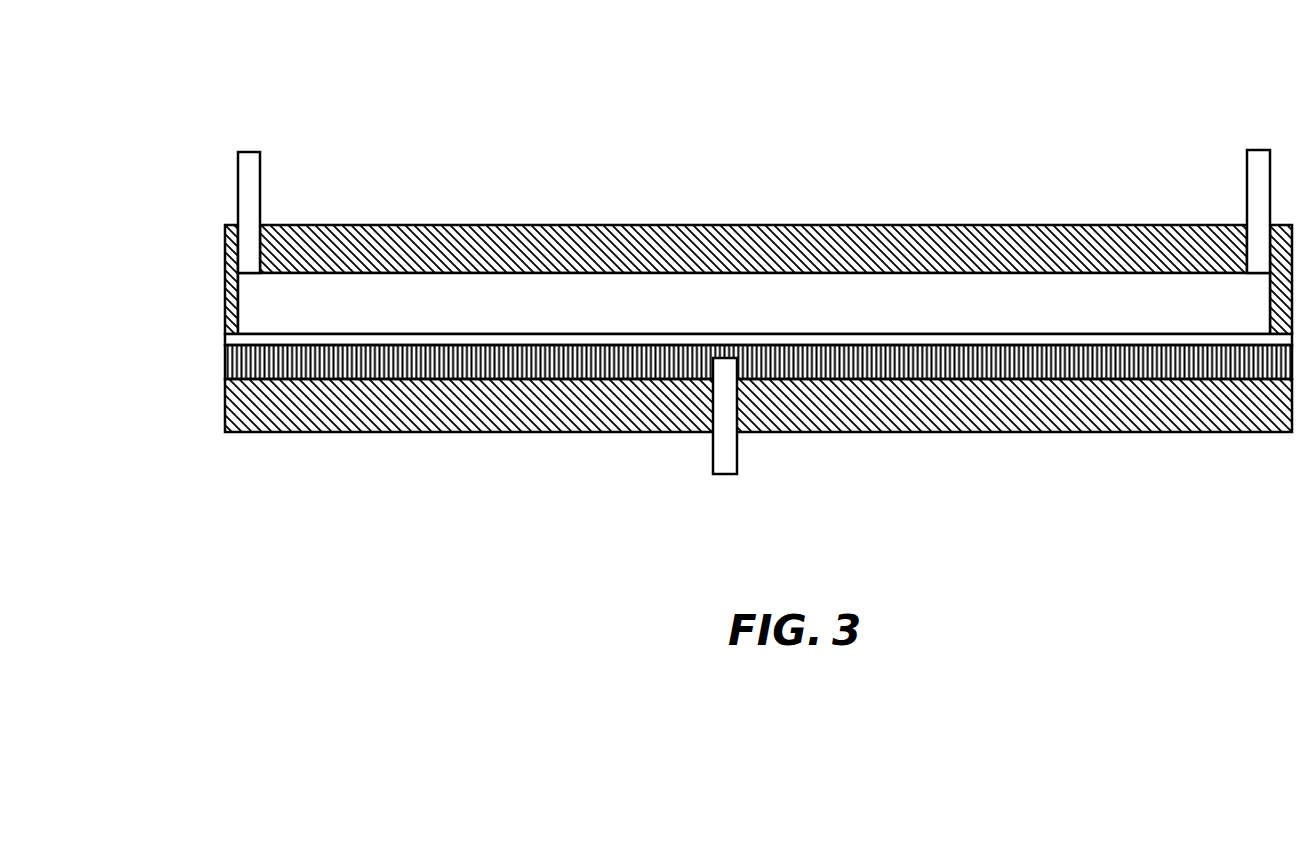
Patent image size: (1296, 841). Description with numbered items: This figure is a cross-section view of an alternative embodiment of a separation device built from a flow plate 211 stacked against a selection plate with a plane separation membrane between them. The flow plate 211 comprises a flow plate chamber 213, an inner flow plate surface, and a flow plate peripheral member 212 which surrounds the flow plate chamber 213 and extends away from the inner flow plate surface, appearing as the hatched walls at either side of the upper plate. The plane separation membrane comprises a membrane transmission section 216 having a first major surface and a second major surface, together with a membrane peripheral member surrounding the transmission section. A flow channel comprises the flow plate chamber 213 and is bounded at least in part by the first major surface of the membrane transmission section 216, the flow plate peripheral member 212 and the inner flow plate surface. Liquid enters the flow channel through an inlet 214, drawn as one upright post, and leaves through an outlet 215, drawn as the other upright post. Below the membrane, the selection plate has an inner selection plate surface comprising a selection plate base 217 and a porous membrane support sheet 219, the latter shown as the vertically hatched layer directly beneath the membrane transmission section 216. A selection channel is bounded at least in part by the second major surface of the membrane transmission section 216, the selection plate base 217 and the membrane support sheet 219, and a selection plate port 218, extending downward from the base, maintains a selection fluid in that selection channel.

The flow plate 211 is at (549, 225).
The flow plate peripheral member 212 is at (208, 313).
The flow plate chamber 213 is at (410, 300).
The inlet 214 is at (1247, 182).
The outlet 215 is at (253, 151).
The membrane transmission section 216 is at (1002, 333).
The selection plate base 217 is at (973, 434).
The selection plate port 218 is at (730, 467).
The membrane support sheet 219 is at (1025, 357).